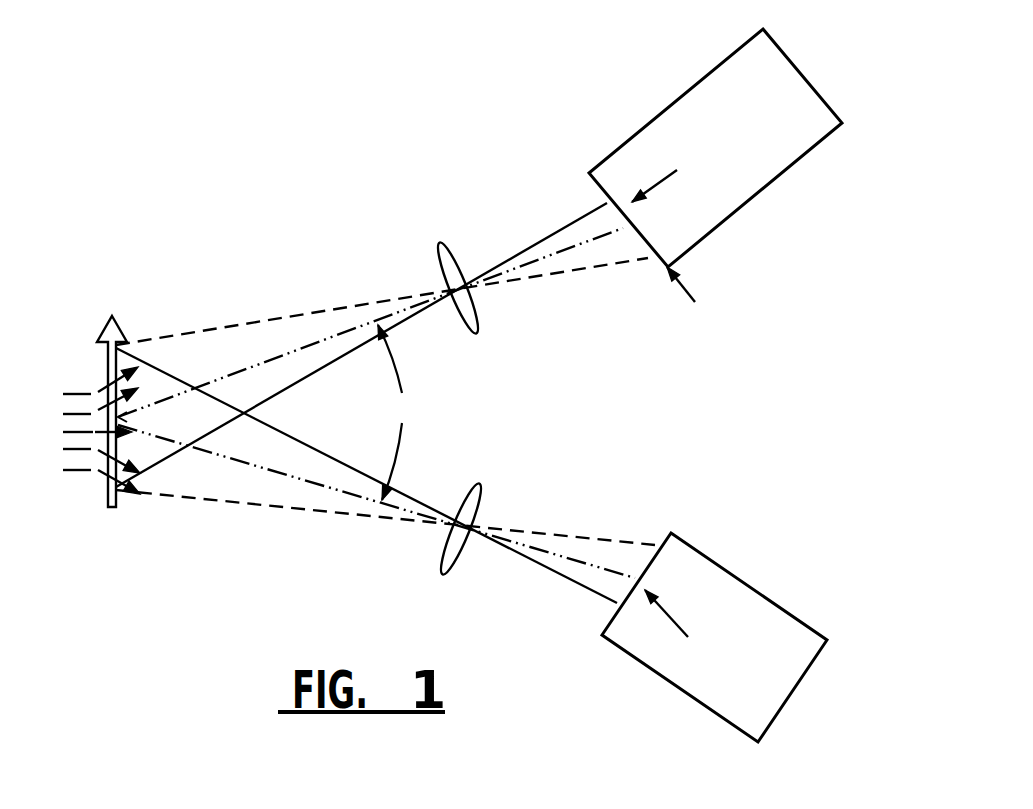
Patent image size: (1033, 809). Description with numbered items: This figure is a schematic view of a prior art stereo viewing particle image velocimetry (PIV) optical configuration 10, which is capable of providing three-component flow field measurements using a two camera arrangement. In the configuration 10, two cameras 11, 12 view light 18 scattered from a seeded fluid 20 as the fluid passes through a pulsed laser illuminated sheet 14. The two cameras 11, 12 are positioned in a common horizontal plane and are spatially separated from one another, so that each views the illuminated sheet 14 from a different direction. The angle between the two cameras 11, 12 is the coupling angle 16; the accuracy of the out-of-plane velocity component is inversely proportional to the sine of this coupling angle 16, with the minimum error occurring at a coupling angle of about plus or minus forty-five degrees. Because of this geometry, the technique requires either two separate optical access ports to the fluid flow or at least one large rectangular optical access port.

The PIV configuration 10 is at (380, 250).
The camera 11 is at (697, 551).
The camera 12 is at (624, 143).
The pulsed laser illuminated sheet 14 is at (108, 508).
The coupling angle 16 is at (423, 380).
The light 18 is at (197, 497).
The seeded fluid 20 is at (85, 378).